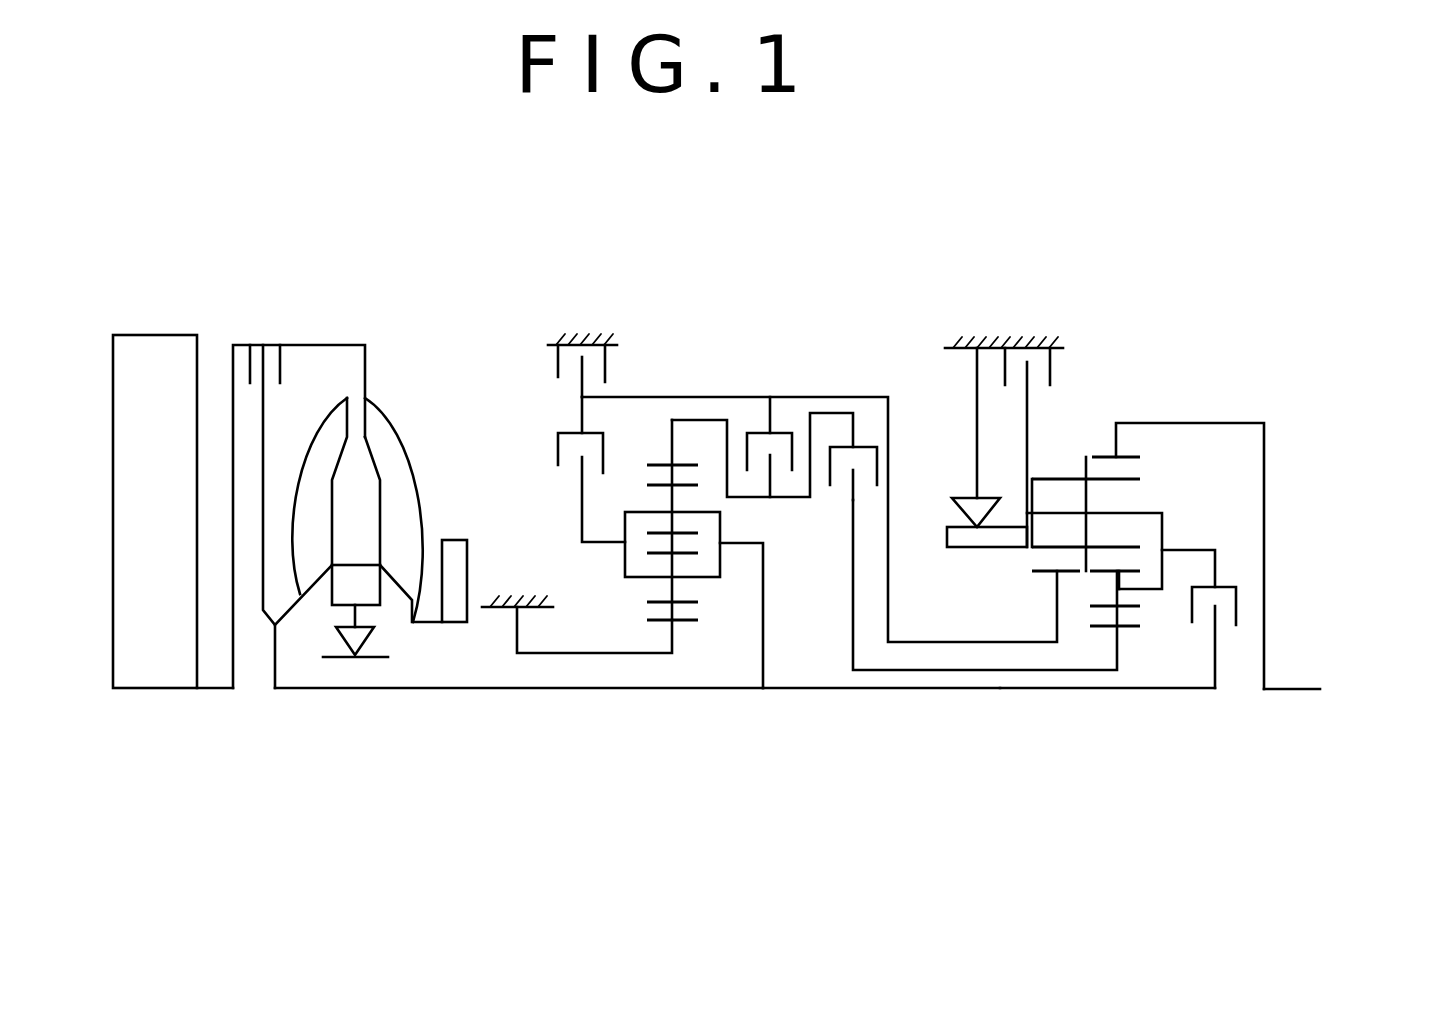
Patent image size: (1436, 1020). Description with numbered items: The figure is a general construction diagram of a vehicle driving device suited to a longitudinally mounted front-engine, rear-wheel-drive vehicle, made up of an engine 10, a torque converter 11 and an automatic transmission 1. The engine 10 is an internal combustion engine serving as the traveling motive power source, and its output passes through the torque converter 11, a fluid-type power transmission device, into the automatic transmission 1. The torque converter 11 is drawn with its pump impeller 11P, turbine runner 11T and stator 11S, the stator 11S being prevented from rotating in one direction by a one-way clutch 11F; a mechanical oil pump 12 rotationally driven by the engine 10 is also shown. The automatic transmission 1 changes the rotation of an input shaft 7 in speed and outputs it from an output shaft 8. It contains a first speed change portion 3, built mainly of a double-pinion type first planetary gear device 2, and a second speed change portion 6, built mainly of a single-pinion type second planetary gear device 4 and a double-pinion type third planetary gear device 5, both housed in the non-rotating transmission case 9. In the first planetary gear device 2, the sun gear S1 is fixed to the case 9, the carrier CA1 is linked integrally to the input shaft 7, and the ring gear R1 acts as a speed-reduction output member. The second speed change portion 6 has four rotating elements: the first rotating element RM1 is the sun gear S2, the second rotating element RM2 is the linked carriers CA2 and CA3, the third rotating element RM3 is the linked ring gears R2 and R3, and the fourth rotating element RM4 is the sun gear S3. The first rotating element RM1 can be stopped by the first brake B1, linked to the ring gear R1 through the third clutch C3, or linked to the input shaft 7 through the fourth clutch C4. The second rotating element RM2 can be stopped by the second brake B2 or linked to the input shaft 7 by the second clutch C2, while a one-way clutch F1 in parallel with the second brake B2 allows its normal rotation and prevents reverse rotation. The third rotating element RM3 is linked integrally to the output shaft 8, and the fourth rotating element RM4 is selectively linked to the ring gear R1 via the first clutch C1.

The automatic transmission 1 is at (1190, 337).
The first planetary gear device 2 is at (660, 438).
The first speed change portion 3 is at (662, 703).
The second planetary gear device 4 is at (1070, 450).
The third planetary gear device 5 is at (1099, 442).
The second speed change portion 6 is at (1113, 705).
The input shaft 7 is at (413, 689).
The output shaft 8 is at (1289, 692).
The transmission case 9 is at (567, 332).
The engine 10 is at (160, 357).
The torque converter 11 is at (372, 364).
The turbine runner 11T is at (317, 447).
The pump impeller 11P is at (388, 432).
The stator 11S is at (337, 595).
The one-way clutch 11F is at (370, 637).
The mechanical oil pump 12 is at (455, 545).
The first brake B1 is at (549, 370).
The second brake B2 is at (1052, 370).
The first clutch C1 is at (877, 468).
The second clutch C2 is at (1237, 606).
The third clutch C3 is at (740, 442).
The fourth clutch C4 is at (558, 460).
The one-way clutch F1 is at (982, 447).
The ring gear R1 is at (683, 457).
The ring gear R2 is at (1140, 456).
The ring gear R3 is at (1252, 426).
The sun gear S1 is at (678, 622).
The sun gear S2 is at (1040, 572).
The sun gear S3 is at (1125, 629).
The carrier CA1 is at (624, 553).
The carrier CA2 is at (1221, 542).
The carrier CA3 is at (1165, 549).
The first rotating element RM1 is at (958, 645).
The second rotating element RM2 is at (1142, 512).
The third rotating element RM3 is at (1231, 418).
The fourth rotating element RM4 is at (947, 675).